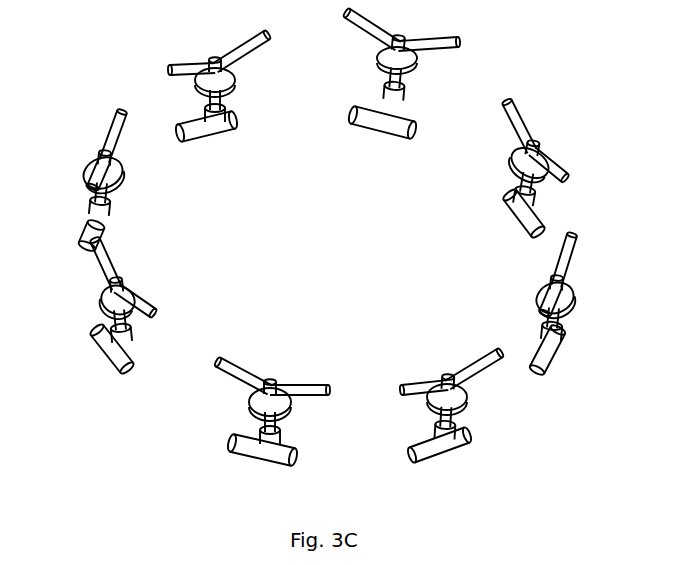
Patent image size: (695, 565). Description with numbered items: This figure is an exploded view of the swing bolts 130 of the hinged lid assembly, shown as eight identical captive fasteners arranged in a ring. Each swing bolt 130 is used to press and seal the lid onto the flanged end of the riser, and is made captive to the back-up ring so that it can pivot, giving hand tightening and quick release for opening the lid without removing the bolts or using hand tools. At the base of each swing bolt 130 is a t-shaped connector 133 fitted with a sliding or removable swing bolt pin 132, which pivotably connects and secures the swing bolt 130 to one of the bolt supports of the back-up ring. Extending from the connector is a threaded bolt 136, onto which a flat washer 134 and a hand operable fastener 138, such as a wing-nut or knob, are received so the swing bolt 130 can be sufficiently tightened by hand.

The swing bolt 130 is at (148, 422).
The swing bolt pin 132 is at (412, 452).
The t-shaped connector 133 is at (455, 453).
The flat washer 134 is at (463, 397).
The threaded bolt 136 is at (553, 317).
The hand operable fastener 138 is at (400, 387).